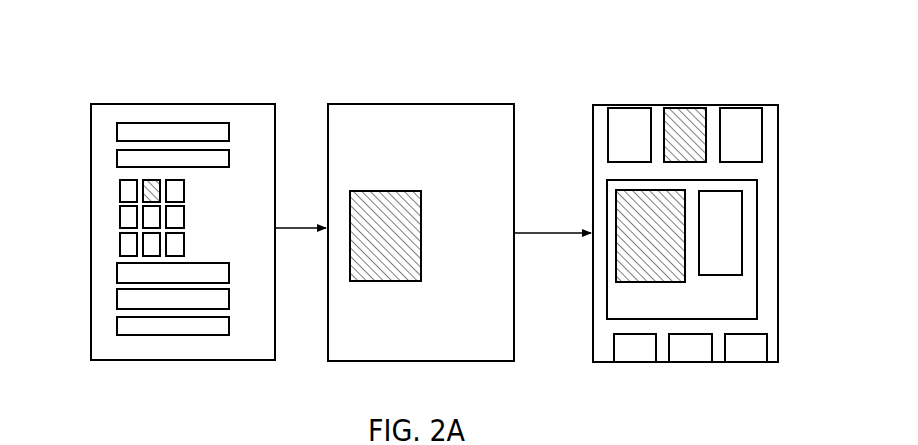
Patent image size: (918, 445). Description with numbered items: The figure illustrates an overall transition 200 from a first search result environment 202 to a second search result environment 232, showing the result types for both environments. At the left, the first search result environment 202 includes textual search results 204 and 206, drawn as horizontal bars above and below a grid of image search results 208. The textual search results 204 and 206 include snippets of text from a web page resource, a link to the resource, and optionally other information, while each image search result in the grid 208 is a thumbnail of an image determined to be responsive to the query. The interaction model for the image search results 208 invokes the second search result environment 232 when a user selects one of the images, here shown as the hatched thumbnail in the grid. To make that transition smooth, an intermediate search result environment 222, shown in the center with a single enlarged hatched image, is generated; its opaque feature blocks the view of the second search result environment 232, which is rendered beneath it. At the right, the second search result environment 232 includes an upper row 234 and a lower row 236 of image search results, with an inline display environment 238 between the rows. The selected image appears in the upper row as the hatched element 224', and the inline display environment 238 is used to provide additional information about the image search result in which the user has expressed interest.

The user interface transformation process 200 is at (76, 49).
The first search result environment 202 is at (182, 104).
The textual search results 204 is at (106, 148).
The grid of image search results 208 is at (106, 209).
The textual search results 206 is at (106, 298).
The intermediate search result environment 222 is at (419, 104).
The second search result environment 232 is at (644, 105).
The transformed selected element 224' is at (715, 111).
The row of image search results 234 is at (736, 111).
The inline display environment 238 is at (757, 235).
The row of image search results 236 is at (788, 343).